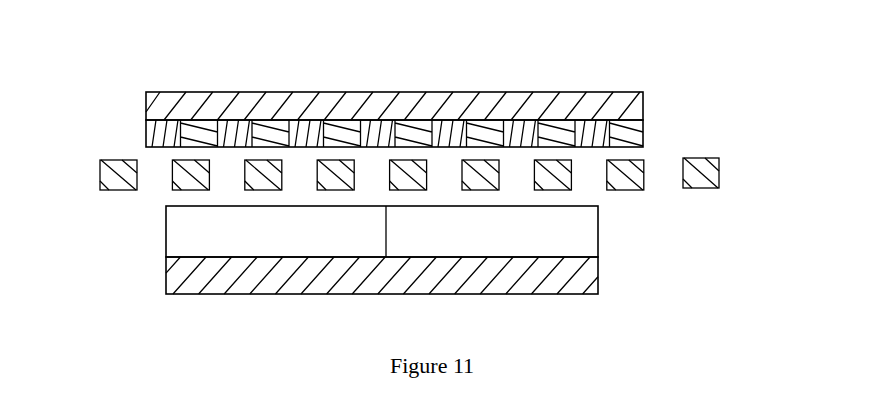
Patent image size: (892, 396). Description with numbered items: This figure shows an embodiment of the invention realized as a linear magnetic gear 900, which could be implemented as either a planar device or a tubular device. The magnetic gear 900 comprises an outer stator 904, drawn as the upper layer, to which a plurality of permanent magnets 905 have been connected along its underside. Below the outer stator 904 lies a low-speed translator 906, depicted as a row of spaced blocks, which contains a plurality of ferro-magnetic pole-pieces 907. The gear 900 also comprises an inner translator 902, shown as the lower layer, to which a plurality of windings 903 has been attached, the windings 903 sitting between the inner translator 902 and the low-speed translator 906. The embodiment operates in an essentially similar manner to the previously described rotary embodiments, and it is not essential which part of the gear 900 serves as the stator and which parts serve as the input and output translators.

The linear magnetic gear 900 is at (643, 275).
The inner translator 902 is at (166, 283).
The windings 903 is at (193, 238).
The outer stator 904 is at (433, 90).
The permanent magnets 905 is at (647, 140).
The low-speed translator 906 is at (657, 183).
The ferro-magnetic pole-pieces 907 is at (712, 168).